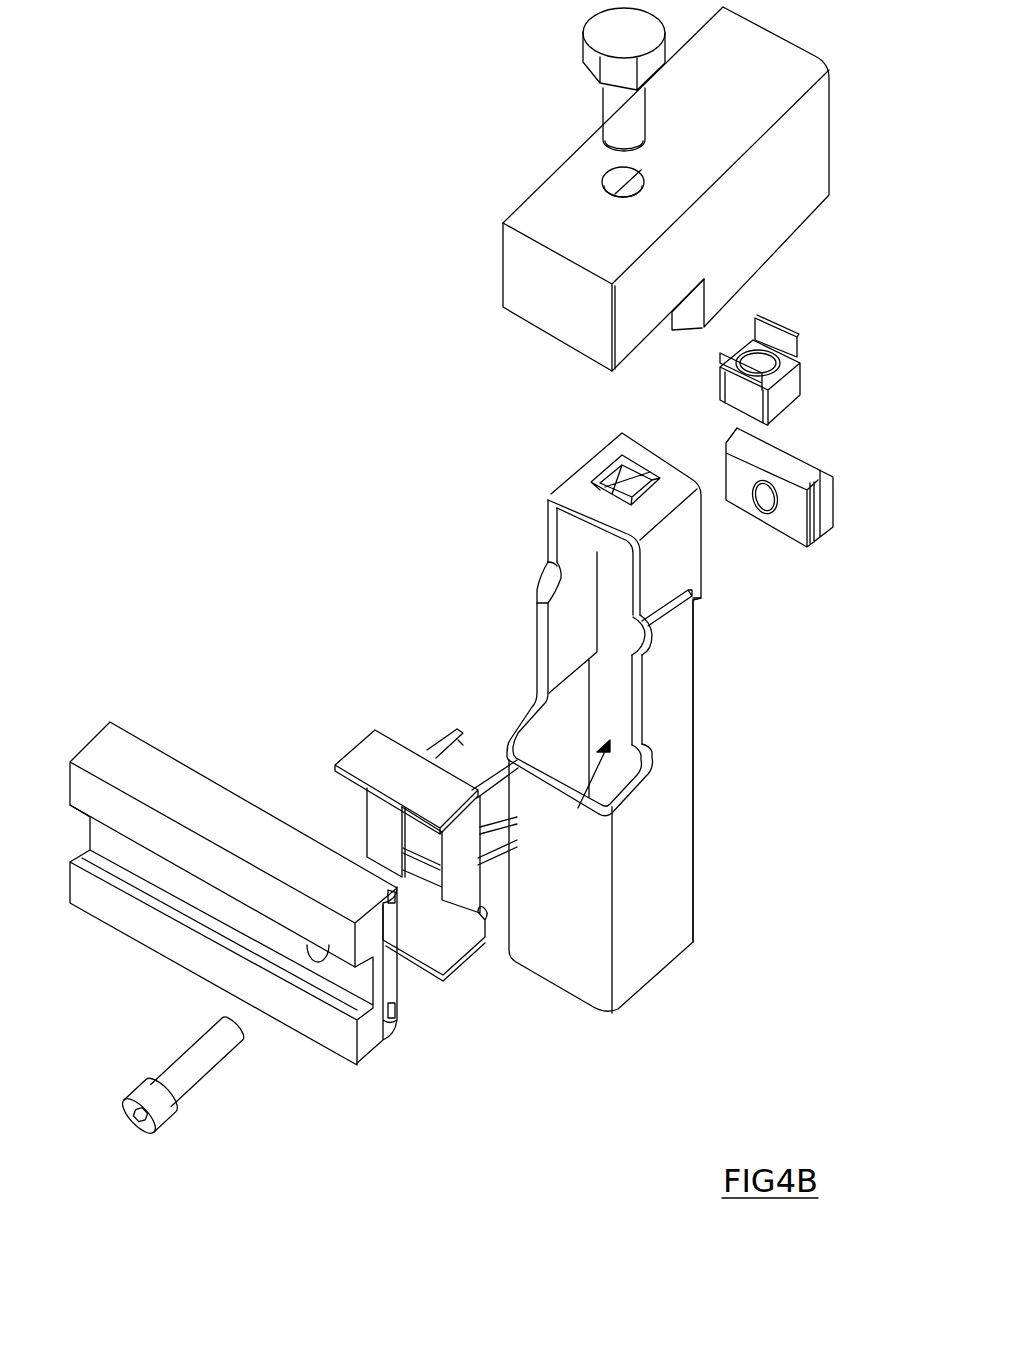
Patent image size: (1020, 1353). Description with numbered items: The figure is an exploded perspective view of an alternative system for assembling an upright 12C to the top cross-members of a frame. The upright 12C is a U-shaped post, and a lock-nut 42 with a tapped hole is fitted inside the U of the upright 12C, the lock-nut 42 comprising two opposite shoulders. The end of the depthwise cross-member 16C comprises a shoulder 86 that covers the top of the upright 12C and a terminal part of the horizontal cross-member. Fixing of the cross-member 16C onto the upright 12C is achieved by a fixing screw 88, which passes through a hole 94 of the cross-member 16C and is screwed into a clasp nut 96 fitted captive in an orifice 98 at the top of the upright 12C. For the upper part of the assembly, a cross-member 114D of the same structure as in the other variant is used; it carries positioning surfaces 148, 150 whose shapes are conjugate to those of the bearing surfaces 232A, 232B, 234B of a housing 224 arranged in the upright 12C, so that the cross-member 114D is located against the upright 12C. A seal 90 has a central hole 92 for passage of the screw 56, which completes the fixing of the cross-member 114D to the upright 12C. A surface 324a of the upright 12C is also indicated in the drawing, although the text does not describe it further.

The upright 12C is at (660, 723).
The depthwise cross-member 16C is at (633, 189).
The lock-nut 42 is at (779, 514).
The screw 56 is at (201, 1074).
The shoulder 86 is at (681, 338).
The fixing screw 88 is at (572, 79).
The seal 90 is at (396, 747).
The central hole 92 is at (410, 836).
The hole 94 is at (676, 198).
The clasp nut 96 is at (800, 370).
The orifice 98 is at (595, 453).
The cross-member 114D is at (233, 852).
The positioning surface 148 is at (435, 939).
The positioning surface 150 is at (431, 978).
The housing 224 is at (575, 806).
The bearing surface 232A is at (529, 658).
The bearing surface 232B is at (491, 552).
The bearing surface 234B is at (725, 637).
The post side surface 324a is at (740, 771).